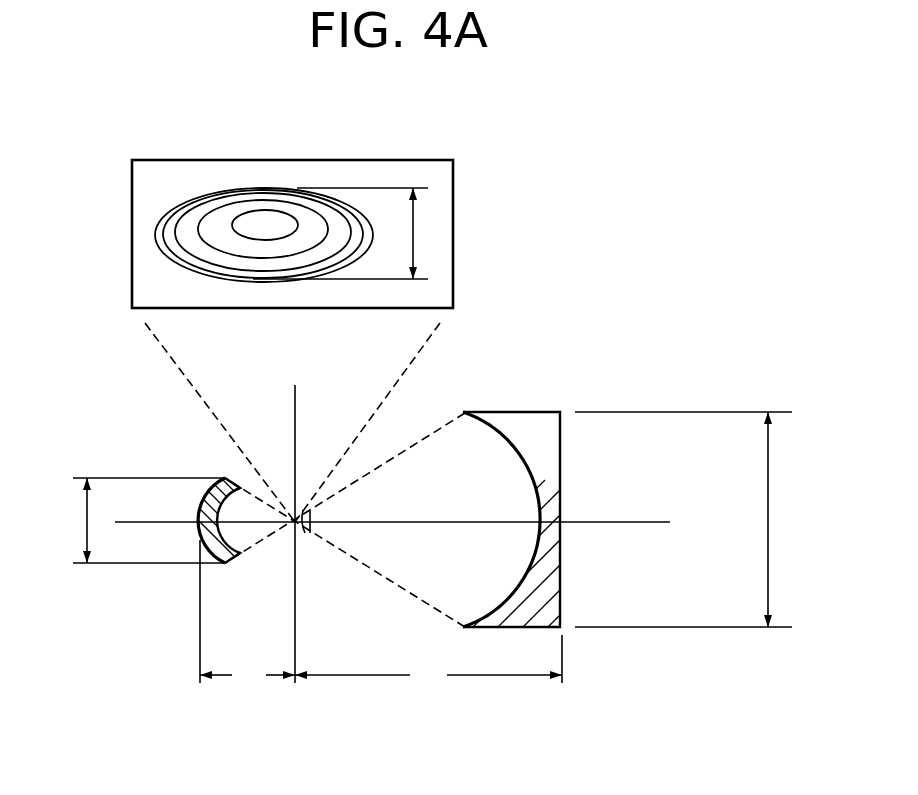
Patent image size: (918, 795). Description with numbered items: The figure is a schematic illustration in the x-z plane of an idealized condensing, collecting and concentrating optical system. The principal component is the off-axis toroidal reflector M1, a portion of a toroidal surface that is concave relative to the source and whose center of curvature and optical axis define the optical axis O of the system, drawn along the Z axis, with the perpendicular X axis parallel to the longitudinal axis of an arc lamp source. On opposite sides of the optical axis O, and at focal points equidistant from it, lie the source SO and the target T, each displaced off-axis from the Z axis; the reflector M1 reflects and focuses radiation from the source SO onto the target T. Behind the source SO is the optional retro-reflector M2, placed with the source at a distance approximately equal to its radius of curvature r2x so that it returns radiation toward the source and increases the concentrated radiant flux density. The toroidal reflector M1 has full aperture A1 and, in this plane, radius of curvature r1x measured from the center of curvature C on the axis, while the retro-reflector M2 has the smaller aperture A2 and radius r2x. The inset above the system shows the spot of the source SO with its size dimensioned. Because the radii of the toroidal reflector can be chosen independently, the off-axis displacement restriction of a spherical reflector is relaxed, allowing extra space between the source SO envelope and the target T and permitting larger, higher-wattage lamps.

The toroidal reflector M1 is at (460, 536).
The retro-reflector M2 is at (220, 505).
The full aperture of the reflector A1 is at (683, 519).
The aperture of the retro-reflector A2 is at (147, 520).
The radius of curvature of the toroidal reflector in the x-z plane r1x is at (428, 661).
The radius of curvature of the retro-reflector in the x-z plane r2x is at (247, 613).
The source SO is at (292, 341).
The x-axis X is at (294, 518).
The Z axis Z is at (404, 522).
The optical axis O is at (450, 519).
The focal point C is at (310, 525).
The target T is at (291, 527).